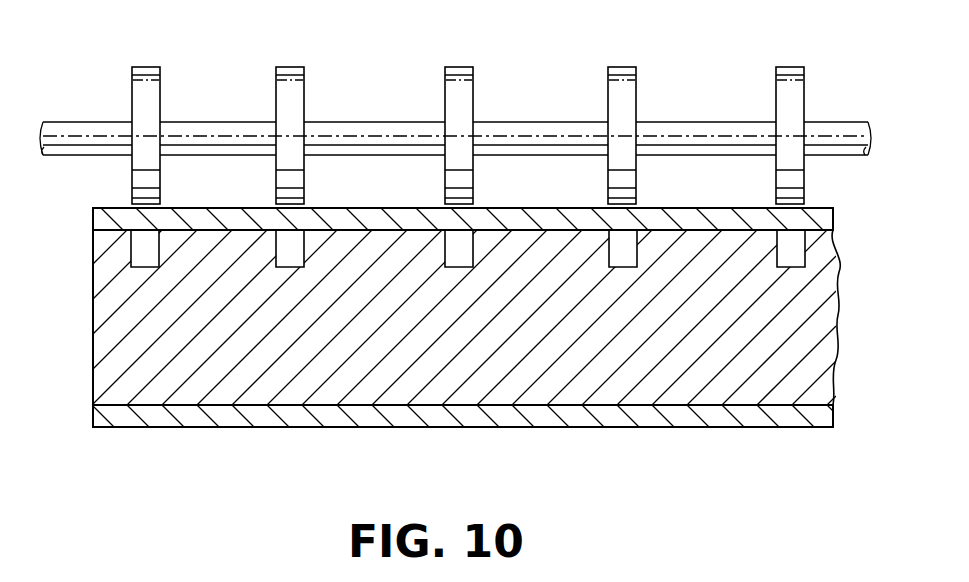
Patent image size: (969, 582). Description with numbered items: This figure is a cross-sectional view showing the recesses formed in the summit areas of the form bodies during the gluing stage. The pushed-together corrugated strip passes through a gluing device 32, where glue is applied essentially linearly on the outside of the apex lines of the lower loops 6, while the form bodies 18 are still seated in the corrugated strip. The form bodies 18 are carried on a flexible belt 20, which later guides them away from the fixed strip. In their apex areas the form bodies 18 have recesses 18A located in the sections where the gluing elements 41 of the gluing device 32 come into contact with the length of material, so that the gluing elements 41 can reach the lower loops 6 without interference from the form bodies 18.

The lower loops 6 is at (98, 222).
The form bodies 18 is at (120, 333).
The recesses 18A is at (455, 248).
The flexible belt 20 is at (335, 417).
The gluing device 32 is at (448, 102).
The gluing elements 41 is at (143, 82).